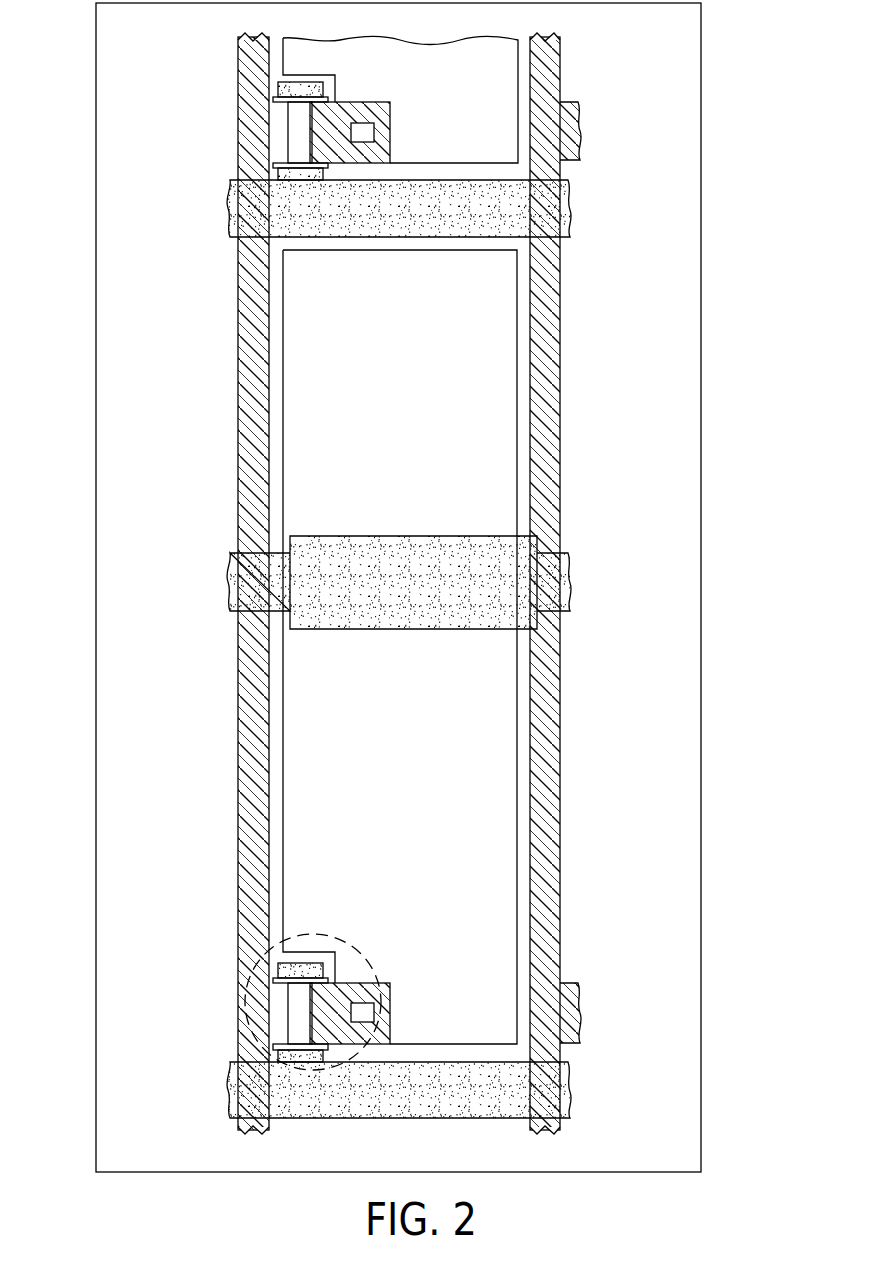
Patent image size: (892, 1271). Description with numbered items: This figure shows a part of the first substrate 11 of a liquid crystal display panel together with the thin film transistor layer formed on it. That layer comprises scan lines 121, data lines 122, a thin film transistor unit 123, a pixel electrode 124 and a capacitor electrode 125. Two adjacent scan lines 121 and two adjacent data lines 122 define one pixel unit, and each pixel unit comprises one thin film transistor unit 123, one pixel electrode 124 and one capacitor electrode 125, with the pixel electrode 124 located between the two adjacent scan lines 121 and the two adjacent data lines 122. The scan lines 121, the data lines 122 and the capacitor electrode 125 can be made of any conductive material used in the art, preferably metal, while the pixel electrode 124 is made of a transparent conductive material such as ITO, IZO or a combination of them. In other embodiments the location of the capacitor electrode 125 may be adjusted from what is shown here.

The first substrate 11 is at (691, 382).
The scan lines 121 is at (562, 215).
The data lines 122 is at (250, 820).
The thin film transistor unit 123 is at (321, 935).
The pixel electrode 124 is at (502, 850).
The capacitor electrode 125 is at (485, 585).